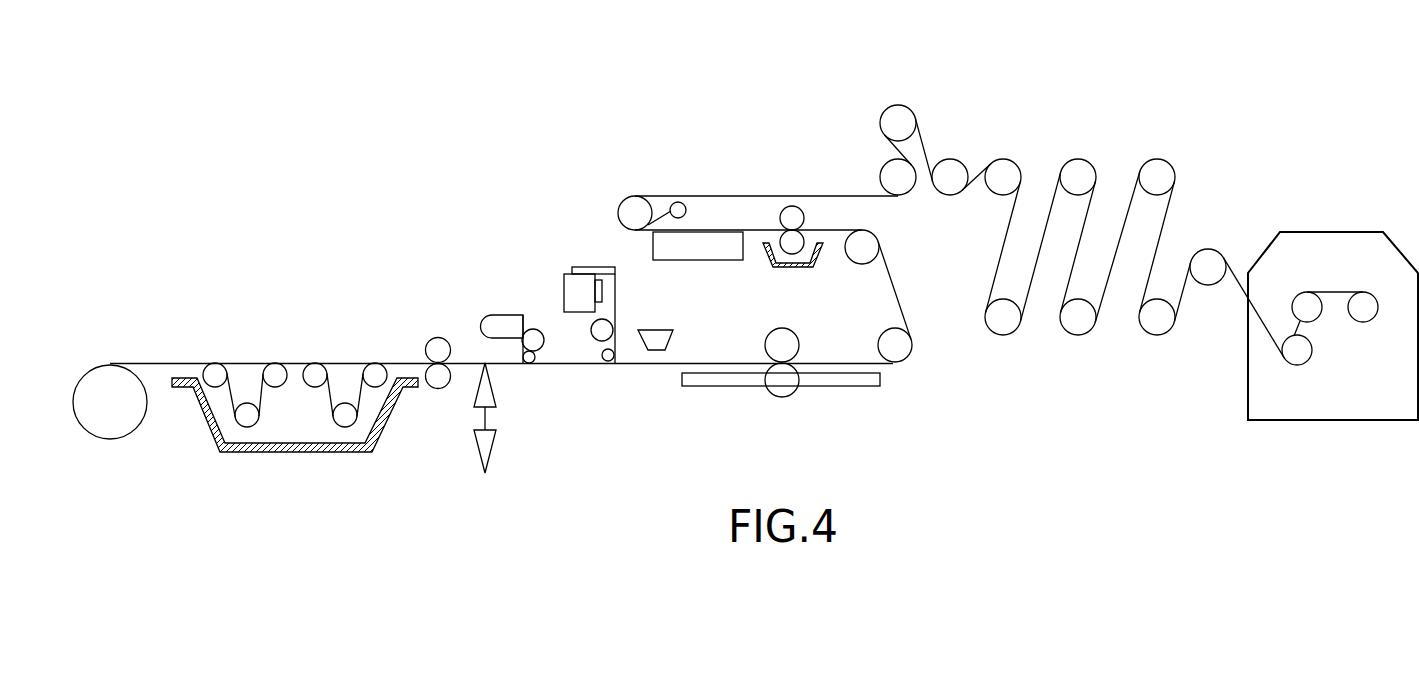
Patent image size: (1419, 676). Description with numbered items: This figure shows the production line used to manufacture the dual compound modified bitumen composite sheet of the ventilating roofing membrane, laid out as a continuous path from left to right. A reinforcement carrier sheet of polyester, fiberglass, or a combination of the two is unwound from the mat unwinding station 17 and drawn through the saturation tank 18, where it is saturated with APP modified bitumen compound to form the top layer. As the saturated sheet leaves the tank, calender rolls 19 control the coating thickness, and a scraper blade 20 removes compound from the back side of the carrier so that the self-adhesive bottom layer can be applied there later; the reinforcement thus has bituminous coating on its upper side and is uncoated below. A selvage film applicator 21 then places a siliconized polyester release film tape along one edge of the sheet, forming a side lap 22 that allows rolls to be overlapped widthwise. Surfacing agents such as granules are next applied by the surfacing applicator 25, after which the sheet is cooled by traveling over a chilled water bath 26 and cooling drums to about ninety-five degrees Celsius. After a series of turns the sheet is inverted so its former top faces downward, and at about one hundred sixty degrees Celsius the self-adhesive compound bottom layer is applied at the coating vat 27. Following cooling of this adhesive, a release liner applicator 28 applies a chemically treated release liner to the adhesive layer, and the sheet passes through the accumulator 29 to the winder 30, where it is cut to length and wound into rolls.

The mat unwinding station 17 is at (137, 430).
The saturation tank 18 is at (293, 415).
The calender rolls 19 is at (433, 340).
The scraper blade 20 is at (493, 450).
The selvage film applicator 21 is at (490, 317).
The side lap 22 is at (590, 267).
The surfacing applicator 25 is at (655, 330).
The chilled water bath 26 is at (853, 387).
The coating vat 27 is at (818, 253).
The release liner applicator 28 is at (635, 197).
The accumulator 29 is at (1003, 160).
The winder 30 is at (1365, 388).